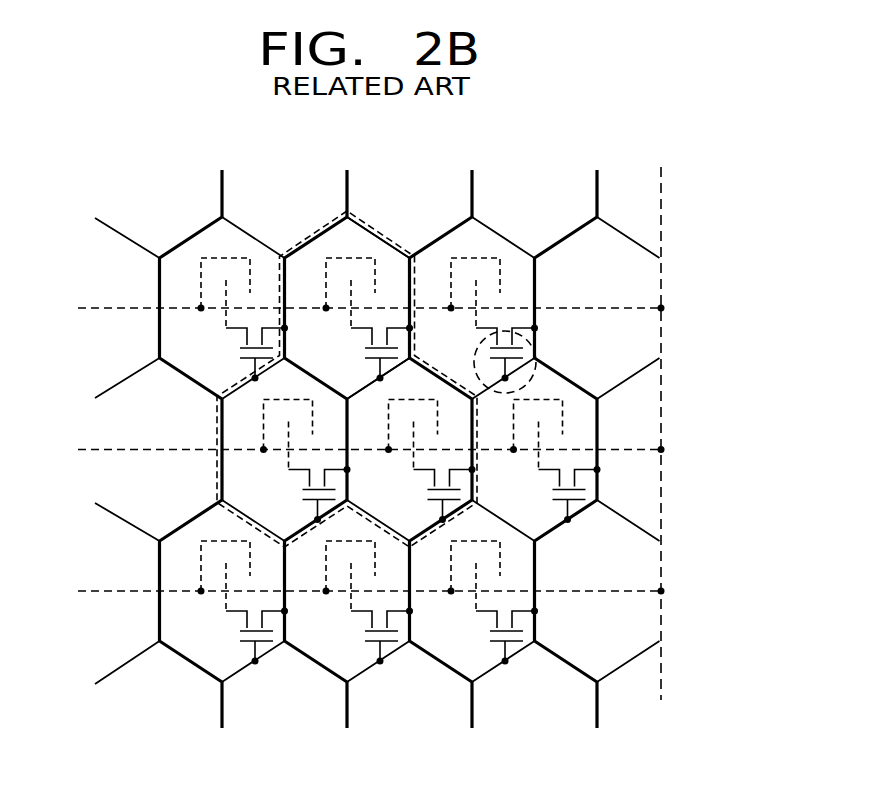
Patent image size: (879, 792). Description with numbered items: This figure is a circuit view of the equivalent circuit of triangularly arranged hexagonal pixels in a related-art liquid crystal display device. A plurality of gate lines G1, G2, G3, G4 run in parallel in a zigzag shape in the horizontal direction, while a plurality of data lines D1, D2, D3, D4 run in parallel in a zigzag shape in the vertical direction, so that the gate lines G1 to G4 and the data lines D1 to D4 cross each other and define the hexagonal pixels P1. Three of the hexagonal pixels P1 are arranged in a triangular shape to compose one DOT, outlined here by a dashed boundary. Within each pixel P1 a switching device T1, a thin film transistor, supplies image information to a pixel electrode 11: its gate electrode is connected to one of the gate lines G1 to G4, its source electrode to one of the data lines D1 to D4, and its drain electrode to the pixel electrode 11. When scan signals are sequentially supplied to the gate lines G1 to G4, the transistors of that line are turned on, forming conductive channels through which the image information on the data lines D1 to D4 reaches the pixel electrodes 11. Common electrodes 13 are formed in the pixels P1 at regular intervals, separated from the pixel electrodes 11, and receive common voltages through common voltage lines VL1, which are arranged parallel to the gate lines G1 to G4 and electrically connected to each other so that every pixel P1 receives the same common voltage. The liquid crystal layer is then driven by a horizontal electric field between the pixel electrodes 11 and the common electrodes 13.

The pixel electrode 11 is at (477, 290).
The common electrode 13 is at (500, 267).
The switching device T1 is at (517, 340).
The pixel P1 is at (312, 258).
The dot DOT is at (373, 228).
The data line D1 is at (195, 435).
The data line D2 is at (320, 435).
The data line D3 is at (445, 435).
The data line D4 is at (570, 435).
The gate line G1 is at (115, 231).
The gate line G2 is at (115, 386).
The gate line G3 is at (115, 515).
The gate line G4 is at (115, 671).
The common voltage line VL1 is at (356, 450).